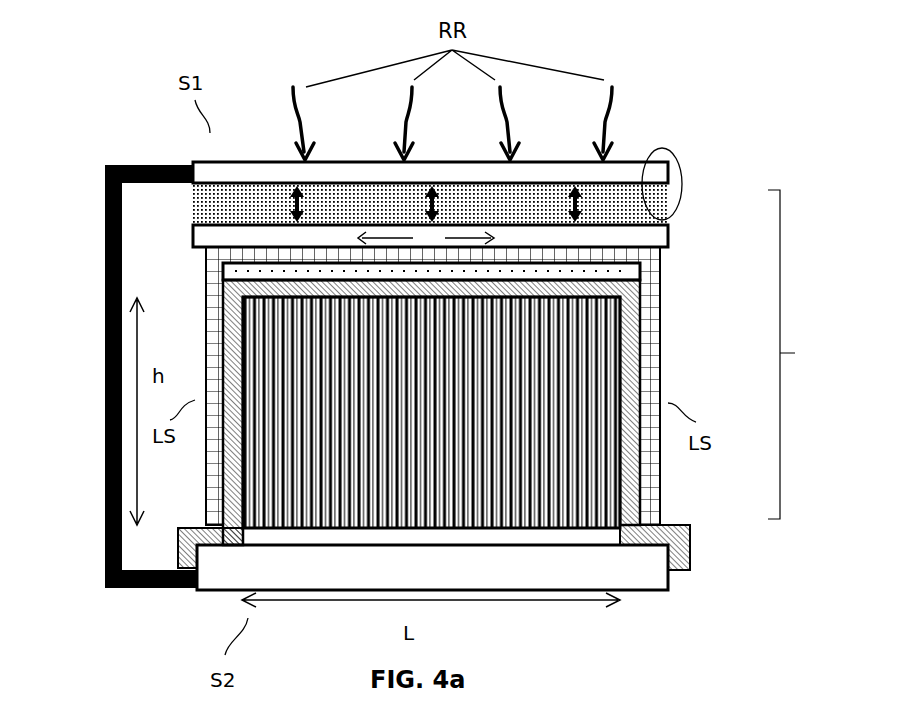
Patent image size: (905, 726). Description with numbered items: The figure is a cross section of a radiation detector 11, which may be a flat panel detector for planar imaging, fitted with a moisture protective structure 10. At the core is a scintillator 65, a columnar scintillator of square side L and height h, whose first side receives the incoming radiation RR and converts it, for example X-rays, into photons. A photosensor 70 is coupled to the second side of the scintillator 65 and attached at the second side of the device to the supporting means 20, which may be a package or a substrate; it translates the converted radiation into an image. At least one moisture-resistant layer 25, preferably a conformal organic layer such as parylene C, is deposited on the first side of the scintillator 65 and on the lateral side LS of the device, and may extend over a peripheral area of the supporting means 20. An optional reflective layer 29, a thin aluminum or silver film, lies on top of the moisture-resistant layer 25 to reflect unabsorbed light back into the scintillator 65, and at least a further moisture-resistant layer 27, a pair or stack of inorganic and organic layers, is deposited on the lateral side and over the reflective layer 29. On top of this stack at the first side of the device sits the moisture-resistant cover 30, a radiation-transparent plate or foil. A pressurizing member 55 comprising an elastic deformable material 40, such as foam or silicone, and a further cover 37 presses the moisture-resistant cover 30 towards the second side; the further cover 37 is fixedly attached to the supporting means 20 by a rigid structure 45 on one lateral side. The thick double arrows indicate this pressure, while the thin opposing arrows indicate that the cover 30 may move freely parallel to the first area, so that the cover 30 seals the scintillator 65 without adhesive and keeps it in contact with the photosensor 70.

The moisture protective structure 10 is at (807, 354).
The radiation detector 11 is at (105, 90).
The supporting means 20 is at (658, 577).
The moisture-resistant layer 25 is at (635, 372).
The further moisture-resistant layer 27 is at (660, 310).
The reflective layer 29 is at (640, 272).
The moisture-resistant cover 30 is at (652, 237).
The further cover 37 is at (660, 173).
The elastic deformable material 40 is at (200, 203).
The rigid structure 45 is at (105, 428).
The pressurizing member 55 is at (675, 191).
The scintillator 65 is at (262, 472).
The photosensor 70 is at (608, 540).